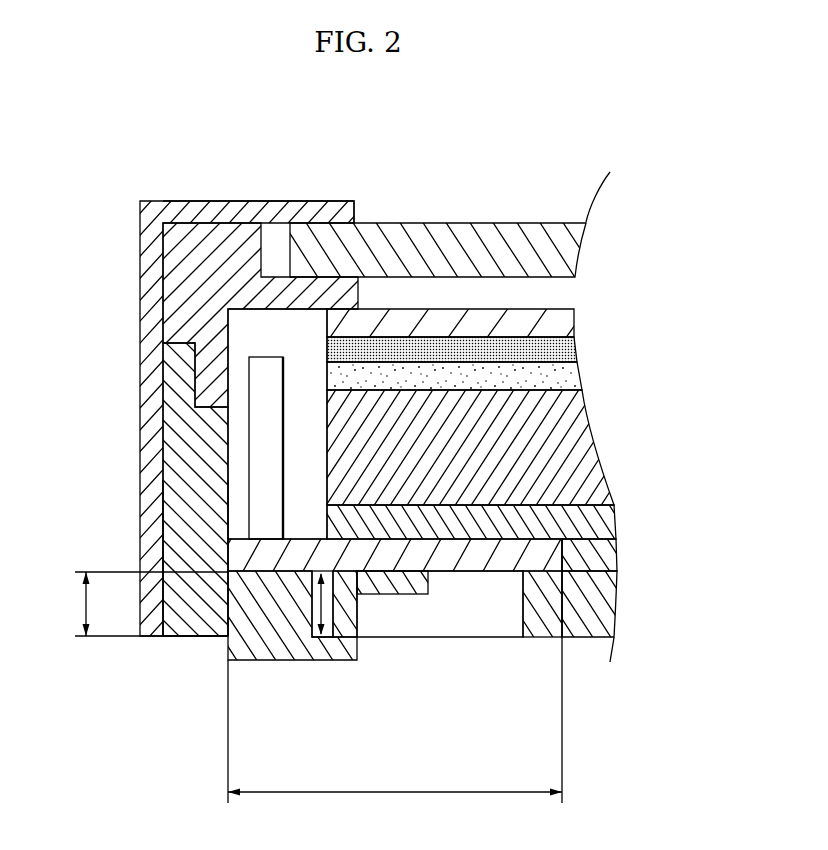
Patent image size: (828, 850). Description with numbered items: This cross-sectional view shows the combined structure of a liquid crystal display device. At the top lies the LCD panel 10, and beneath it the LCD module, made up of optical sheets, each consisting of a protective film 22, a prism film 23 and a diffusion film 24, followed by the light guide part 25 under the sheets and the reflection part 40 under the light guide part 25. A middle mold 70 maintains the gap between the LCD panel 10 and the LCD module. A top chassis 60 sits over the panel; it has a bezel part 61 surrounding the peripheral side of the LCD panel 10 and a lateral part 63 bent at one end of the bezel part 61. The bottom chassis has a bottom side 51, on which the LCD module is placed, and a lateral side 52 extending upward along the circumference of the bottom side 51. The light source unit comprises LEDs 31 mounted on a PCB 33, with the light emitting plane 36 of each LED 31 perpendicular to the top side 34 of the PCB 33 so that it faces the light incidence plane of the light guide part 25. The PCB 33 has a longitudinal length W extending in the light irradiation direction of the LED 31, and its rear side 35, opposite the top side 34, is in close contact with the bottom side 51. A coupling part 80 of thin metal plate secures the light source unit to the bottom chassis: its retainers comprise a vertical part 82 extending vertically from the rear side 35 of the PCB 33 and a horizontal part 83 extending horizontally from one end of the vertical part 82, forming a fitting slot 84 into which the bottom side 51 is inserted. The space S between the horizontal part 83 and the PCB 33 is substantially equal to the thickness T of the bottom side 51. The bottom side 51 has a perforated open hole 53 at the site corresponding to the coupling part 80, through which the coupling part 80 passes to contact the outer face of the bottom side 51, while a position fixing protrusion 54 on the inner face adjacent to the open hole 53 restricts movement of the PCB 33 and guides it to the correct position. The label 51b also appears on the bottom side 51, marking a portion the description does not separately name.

The LCD panel 10 is at (578, 250).
The protective film 22 is at (569, 310).
The prism film 23 is at (574, 345).
The diffusion film 24 is at (576, 376).
The light guide part 25 is at (580, 446).
The reflection part 40 is at (600, 510).
The PCB 33 is at (554, 548).
The position fixing protrusion 54 is at (578, 560).
The bottom side 51 is at (610, 630).
The rear case bottom edge 51b is at (178, 637).
The lateral side 52 is at (178, 542).
The open hole 53 is at (523, 608).
The top chassis 60 is at (150, 252).
The bezel part 61 is at (257, 208).
The lateral part 63 is at (138, 355).
The middle mold 70 is at (185, 283).
The LEDs 31 is at (253, 493).
The light emitting plane 36 is at (282, 461).
The top side 34 is at (316, 540).
The rear side 35 is at (468, 573).
The coupling part 80 is at (304, 667).
The vertical part 82 is at (353, 627).
The horizontal part 83 is at (258, 655).
The fitting slot 84 is at (372, 590).
The space S is at (327, 590).
The thickness T is at (142, 604).
The longitudinal length W is at (395, 681).